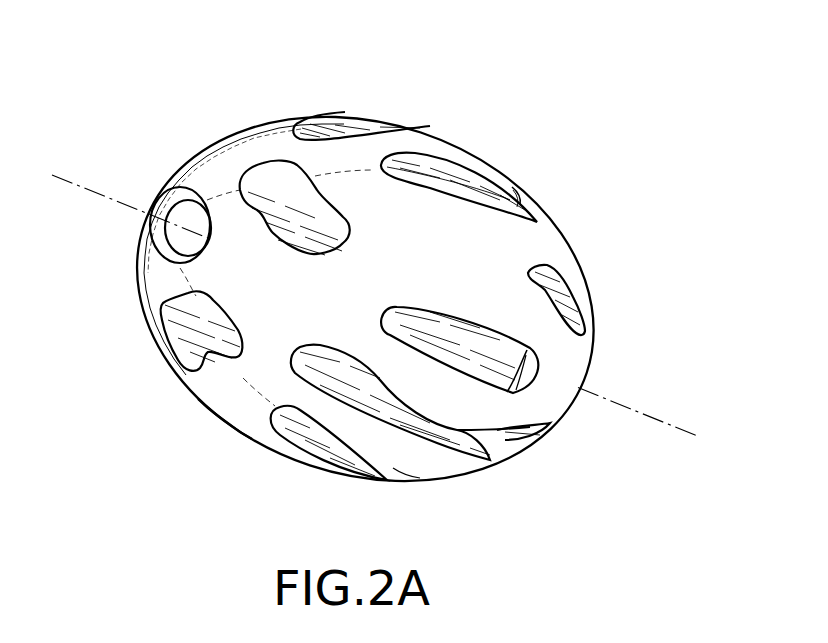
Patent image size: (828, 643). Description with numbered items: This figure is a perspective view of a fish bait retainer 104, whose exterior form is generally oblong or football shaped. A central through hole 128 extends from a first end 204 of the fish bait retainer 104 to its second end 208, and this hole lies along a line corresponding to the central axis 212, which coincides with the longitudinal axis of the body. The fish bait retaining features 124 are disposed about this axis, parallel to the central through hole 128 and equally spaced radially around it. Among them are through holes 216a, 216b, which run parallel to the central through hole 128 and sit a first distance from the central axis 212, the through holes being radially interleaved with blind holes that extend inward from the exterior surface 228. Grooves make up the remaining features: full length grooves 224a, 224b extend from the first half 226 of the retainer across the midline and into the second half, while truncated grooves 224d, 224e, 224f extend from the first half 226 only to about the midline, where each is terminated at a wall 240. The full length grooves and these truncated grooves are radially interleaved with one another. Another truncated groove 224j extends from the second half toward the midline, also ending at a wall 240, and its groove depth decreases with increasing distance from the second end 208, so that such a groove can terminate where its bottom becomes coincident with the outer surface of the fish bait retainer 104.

The fish bait retainer 104 is at (452, 96).
The fish bait retaining features 124 is at (350, 112).
The central through hole 128 is at (173, 232).
The first end 204 is at (144, 189).
The second end 208 is at (590, 346).
The central axis 212 is at (673, 423).
The through hole 216a is at (278, 180).
The through hole 216b is at (188, 332).
The full length groove 224a is at (330, 127).
The full length groove 224b is at (517, 440).
The truncated groove 224d is at (495, 188).
The truncated groove 224e is at (490, 359).
The truncated groove 224f is at (377, 468).
The truncated groove 224j is at (570, 302).
The first half 226 is at (180, 373).
The exterior surface 228 is at (235, 405).
The wall 240 is at (520, 205).